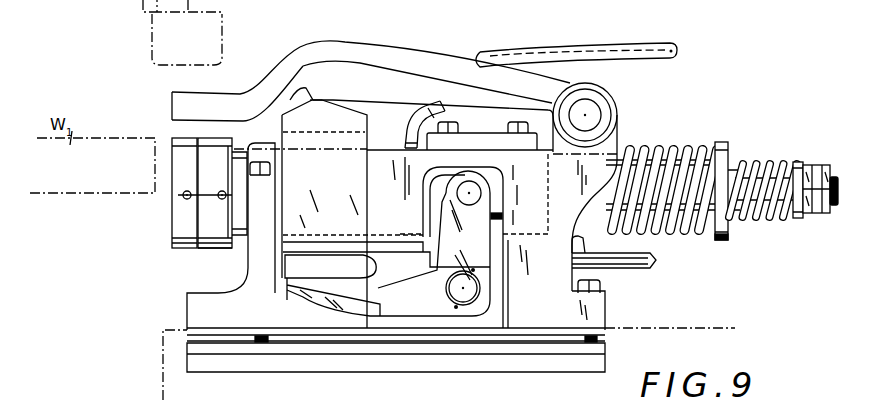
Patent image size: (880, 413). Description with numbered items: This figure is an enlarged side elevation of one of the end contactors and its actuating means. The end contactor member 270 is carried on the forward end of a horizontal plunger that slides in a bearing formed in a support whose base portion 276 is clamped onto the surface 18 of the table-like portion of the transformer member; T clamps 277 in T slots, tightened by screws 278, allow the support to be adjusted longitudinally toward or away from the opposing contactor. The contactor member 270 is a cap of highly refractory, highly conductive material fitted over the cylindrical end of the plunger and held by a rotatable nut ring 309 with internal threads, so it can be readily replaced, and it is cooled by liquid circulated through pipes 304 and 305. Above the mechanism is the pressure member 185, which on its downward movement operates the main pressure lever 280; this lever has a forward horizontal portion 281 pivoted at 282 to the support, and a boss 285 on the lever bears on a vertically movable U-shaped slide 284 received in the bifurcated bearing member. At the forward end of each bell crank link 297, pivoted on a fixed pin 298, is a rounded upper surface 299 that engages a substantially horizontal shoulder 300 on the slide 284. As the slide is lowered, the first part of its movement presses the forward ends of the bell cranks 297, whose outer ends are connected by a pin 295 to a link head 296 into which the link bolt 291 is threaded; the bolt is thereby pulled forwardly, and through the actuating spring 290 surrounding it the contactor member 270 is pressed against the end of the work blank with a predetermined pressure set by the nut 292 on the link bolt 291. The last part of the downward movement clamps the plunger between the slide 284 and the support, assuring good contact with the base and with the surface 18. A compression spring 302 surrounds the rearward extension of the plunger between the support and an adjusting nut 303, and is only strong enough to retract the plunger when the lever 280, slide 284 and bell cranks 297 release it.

The surface 18 is at (673, 327).
The pressure member 185 is at (218, 26).
The end contactor member 270 is at (177, 211).
The base portion 276 is at (198, 307).
The T clamps 277 is at (607, 348).
The screws 278 is at (600, 286).
The main pressure lever 280 is at (373, 30).
The forward horizontal portion 281 is at (170, 105).
The pivot 282 is at (593, 113).
The U-shaped slide 284 is at (362, 214).
The boss 285 is at (320, 98).
The actuating spring 290 is at (782, 158).
The link bolt 291 is at (833, 175).
The nut 292 is at (810, 218).
The pin 295 is at (457, 205).
The link head 296 is at (504, 192).
The bell crank links 297 is at (388, 243).
The fixed pin 298 is at (455, 305).
The rounded upper surface 299 is at (354, 282).
The horizontal shoulder 300 is at (358, 274).
The compression spring 302 is at (668, 133).
The adjusting nut 303 is at (720, 142).
The pipe 304 is at (578, 30).
The pipe 305 is at (656, 262).
The rotatable nut ring 309 is at (222, 252).